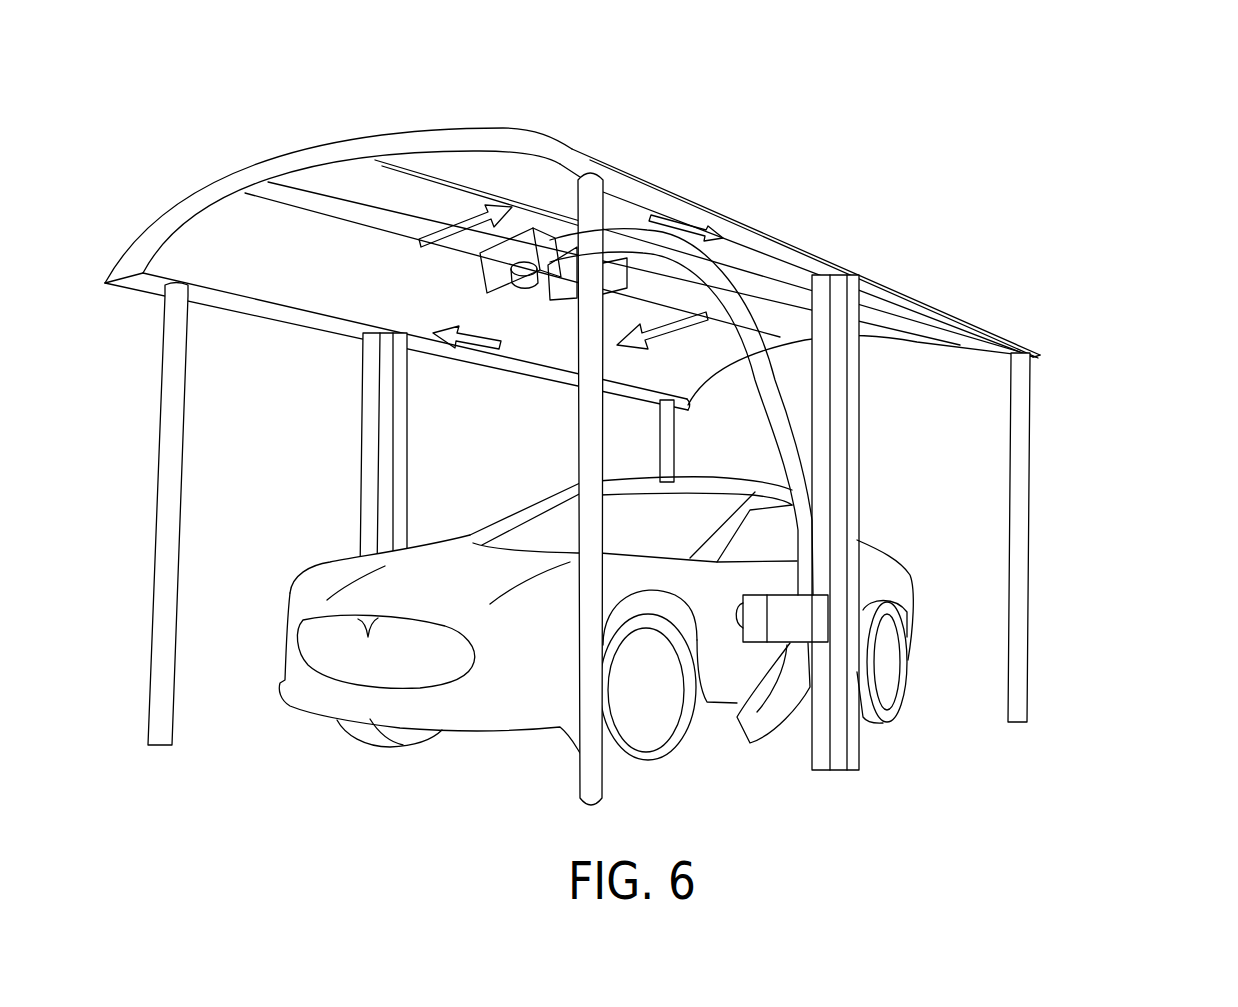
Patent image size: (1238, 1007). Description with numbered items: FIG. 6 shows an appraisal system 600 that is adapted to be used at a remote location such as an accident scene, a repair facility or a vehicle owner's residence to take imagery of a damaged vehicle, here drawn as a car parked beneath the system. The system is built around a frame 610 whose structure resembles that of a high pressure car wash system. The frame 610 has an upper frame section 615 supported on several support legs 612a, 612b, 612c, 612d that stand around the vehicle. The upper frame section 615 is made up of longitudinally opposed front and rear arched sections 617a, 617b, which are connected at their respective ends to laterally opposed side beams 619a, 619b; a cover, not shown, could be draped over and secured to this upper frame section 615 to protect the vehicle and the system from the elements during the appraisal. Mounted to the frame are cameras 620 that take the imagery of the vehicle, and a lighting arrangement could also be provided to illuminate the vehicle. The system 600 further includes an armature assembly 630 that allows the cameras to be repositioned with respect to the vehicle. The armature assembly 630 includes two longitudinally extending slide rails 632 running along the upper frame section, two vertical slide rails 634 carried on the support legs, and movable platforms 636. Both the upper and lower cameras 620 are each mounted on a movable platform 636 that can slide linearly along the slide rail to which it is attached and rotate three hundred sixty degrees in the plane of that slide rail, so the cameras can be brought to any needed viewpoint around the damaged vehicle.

The appraisal system 600 is at (655, 406).
The frame 610 is at (655, 406).
The support leg 612a is at (593, 767).
The support leg 612b is at (1017, 588).
The support leg 612c is at (674, 418).
The support leg 612d is at (173, 412).
The upper frame section 615 is at (611, 250).
The front arched section 617a is at (242, 168).
The rear arched section 617b is at (915, 342).
The side beam 619a is at (890, 295).
The side beam 619b is at (247, 296).
The camera 620 is at (533, 281).
The armature assembly 630 is at (611, 205).
The longitudinally extending slide rail 632 is at (443, 158).
The vertical slide rail 634 is at (370, 483).
The movable platform 636 is at (603, 236).